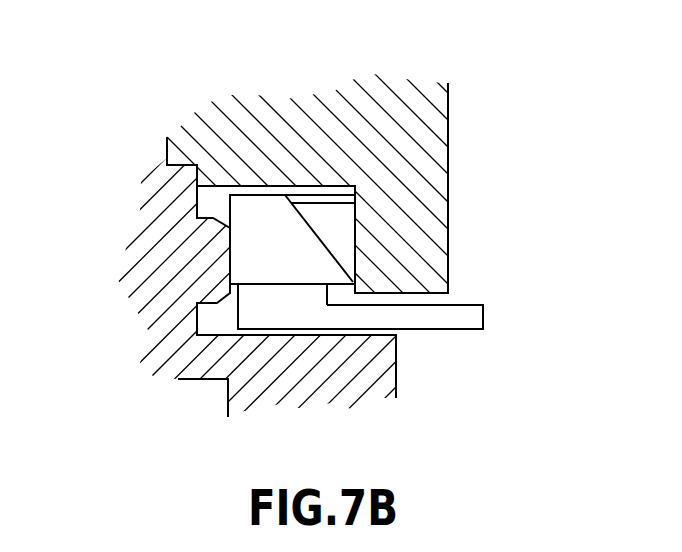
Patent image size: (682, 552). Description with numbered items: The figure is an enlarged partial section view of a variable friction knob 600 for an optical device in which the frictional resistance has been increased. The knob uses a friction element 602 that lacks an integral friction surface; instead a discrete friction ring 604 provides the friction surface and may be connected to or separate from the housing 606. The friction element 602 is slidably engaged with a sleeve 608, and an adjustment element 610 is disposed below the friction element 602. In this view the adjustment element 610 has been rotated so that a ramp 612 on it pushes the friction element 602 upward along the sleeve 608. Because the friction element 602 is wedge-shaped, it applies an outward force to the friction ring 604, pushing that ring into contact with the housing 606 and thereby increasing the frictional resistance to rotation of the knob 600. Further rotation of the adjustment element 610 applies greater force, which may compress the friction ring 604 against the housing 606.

The variable friction knob 600 is at (525, 87).
The friction element 602 is at (260, 212).
The friction ring 604 is at (340, 223).
The housing 606 is at (380, 100).
The sleeve 608 is at (212, 273).
The adjustment element 610 is at (422, 315).
The ramp 612 is at (257, 298).